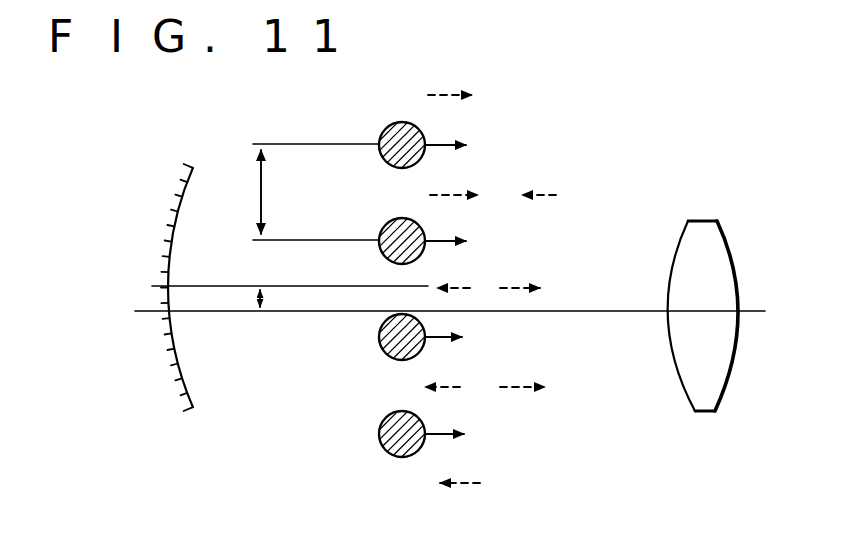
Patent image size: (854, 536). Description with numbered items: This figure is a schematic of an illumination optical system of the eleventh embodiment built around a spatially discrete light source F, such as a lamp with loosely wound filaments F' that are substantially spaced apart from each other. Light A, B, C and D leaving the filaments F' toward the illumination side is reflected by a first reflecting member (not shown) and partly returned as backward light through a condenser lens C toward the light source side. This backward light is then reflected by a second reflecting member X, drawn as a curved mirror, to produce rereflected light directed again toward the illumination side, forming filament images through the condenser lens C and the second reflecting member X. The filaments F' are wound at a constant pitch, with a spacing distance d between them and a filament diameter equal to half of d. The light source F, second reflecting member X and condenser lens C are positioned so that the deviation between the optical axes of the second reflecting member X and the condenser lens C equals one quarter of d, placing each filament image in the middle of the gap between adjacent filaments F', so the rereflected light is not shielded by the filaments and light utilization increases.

The second reflecting member X is at (193, 404).
The condenser lens C is at (694, 412).
The discrete light source F is at (460, 298).
The filaments F' is at (380, 122).
The spacing distance between the filaments d is at (307, 192).